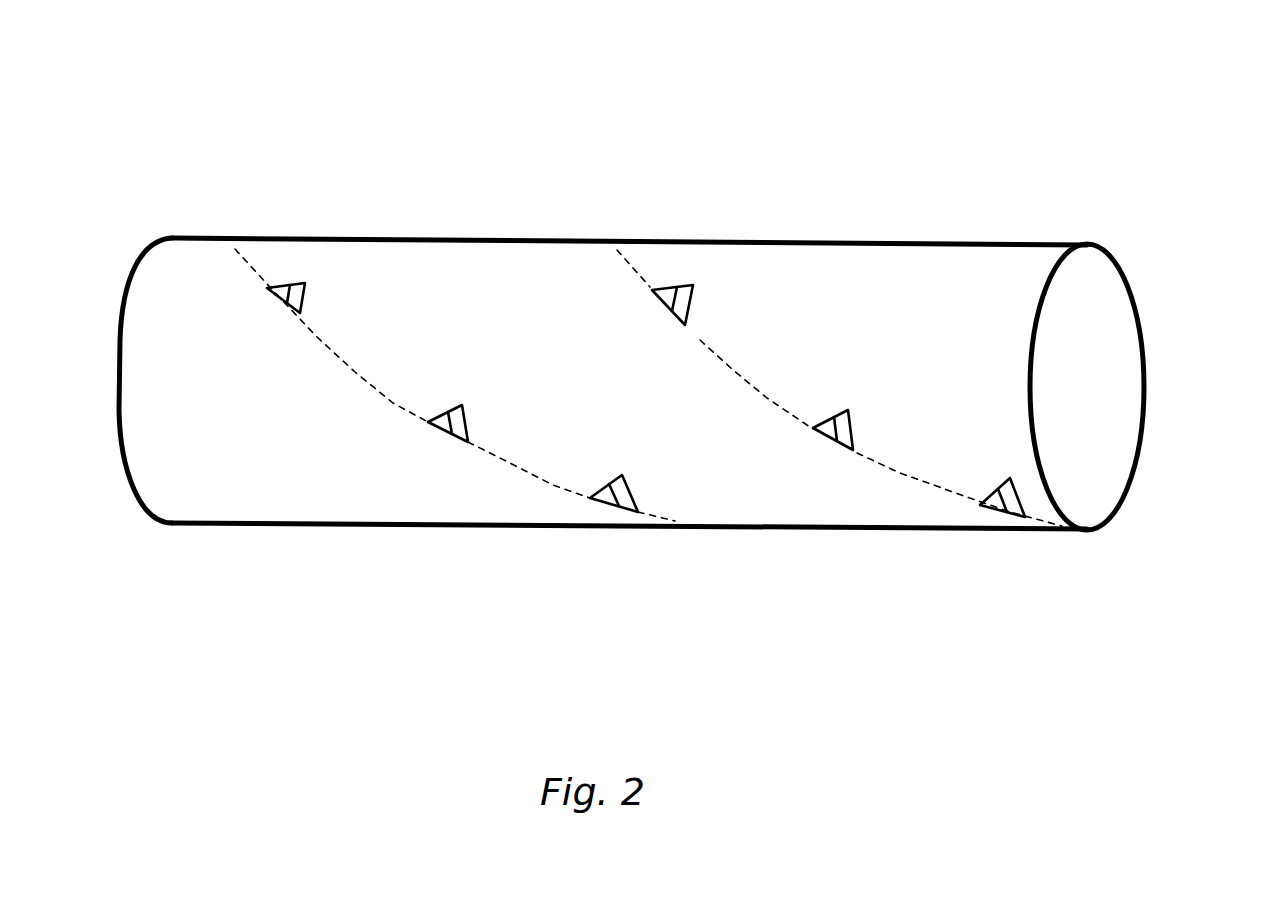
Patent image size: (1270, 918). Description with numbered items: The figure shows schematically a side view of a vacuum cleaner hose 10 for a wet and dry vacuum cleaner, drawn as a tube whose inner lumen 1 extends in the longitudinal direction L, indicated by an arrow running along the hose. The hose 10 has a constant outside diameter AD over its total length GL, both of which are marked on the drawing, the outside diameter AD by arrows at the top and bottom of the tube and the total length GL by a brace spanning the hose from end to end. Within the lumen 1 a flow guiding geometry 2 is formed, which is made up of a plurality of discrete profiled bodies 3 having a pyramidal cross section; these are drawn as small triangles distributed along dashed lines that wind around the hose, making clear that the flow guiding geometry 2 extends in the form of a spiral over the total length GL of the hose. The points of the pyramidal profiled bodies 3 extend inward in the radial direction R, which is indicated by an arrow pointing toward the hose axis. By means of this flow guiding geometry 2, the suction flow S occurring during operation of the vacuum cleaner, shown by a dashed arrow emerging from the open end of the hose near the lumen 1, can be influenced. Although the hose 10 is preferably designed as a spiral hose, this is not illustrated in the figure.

The vacuum cleaner hose 10 is at (1118, 150).
The inner lumen 1 is at (1110, 358).
The flow guiding geometry 2 is at (432, 387).
The discrete profiled bodies 3 is at (297, 280).
The outside diameter AD is at (180, 238).
The radial direction R is at (790, 290).
The longitudinal direction L is at (573, 112).
The suction flow S is at (1086, 468).
The total length GL is at (185, 580).